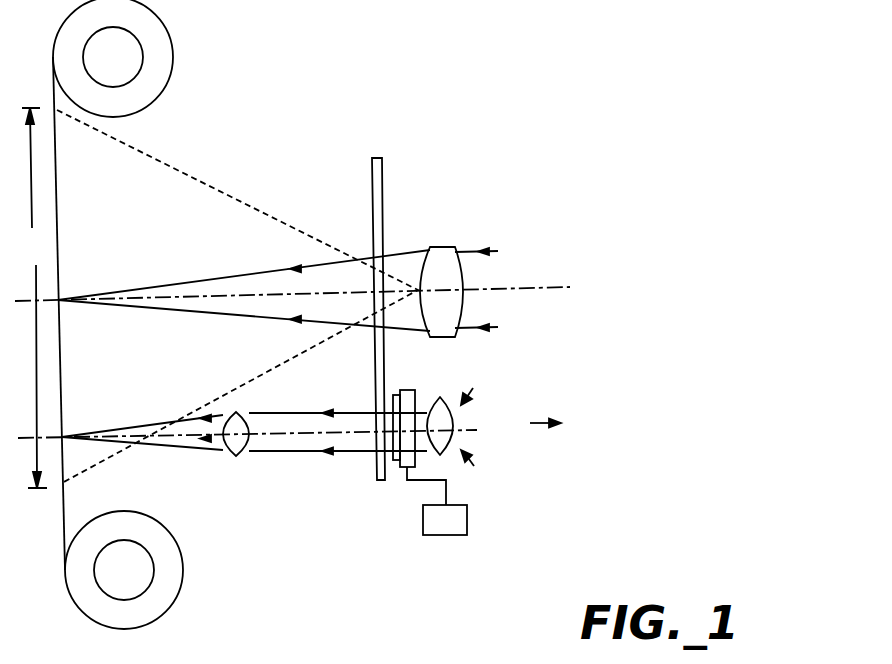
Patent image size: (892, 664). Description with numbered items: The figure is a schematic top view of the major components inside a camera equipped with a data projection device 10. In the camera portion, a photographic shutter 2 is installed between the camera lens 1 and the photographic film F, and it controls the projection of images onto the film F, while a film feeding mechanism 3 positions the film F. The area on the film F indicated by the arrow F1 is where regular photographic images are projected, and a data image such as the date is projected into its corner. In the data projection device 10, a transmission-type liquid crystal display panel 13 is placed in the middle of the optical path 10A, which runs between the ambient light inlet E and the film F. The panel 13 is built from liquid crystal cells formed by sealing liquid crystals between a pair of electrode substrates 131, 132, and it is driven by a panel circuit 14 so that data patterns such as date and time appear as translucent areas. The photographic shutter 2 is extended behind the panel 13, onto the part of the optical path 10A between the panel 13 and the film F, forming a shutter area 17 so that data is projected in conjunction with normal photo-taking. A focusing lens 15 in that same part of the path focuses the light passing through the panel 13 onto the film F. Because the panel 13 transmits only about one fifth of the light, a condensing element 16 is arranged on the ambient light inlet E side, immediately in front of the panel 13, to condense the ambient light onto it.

The camera lens 1 is at (447, 247).
The photographic shutter 2 is at (381, 160).
The film feeding mechanism 3 is at (168, 32).
The data projection device 10 is at (588, 432).
The optical path 10A is at (526, 353).
The transmission-type liquid crystal display panel 13 is at (440, 563).
The panel circuit 14 is at (437, 501).
The focusing lens 15 is at (236, 456).
The condensing element 16 is at (445, 457).
The shutter area 17 is at (352, 480).
The electrode substrate 131 is at (407, 468).
The electrode substrate 132 is at (396, 462).
The photographic film F is at (58, 188).
The regular photographic image area F1 is at (31, 298).
The ambient light inlet E is at (534, 425).